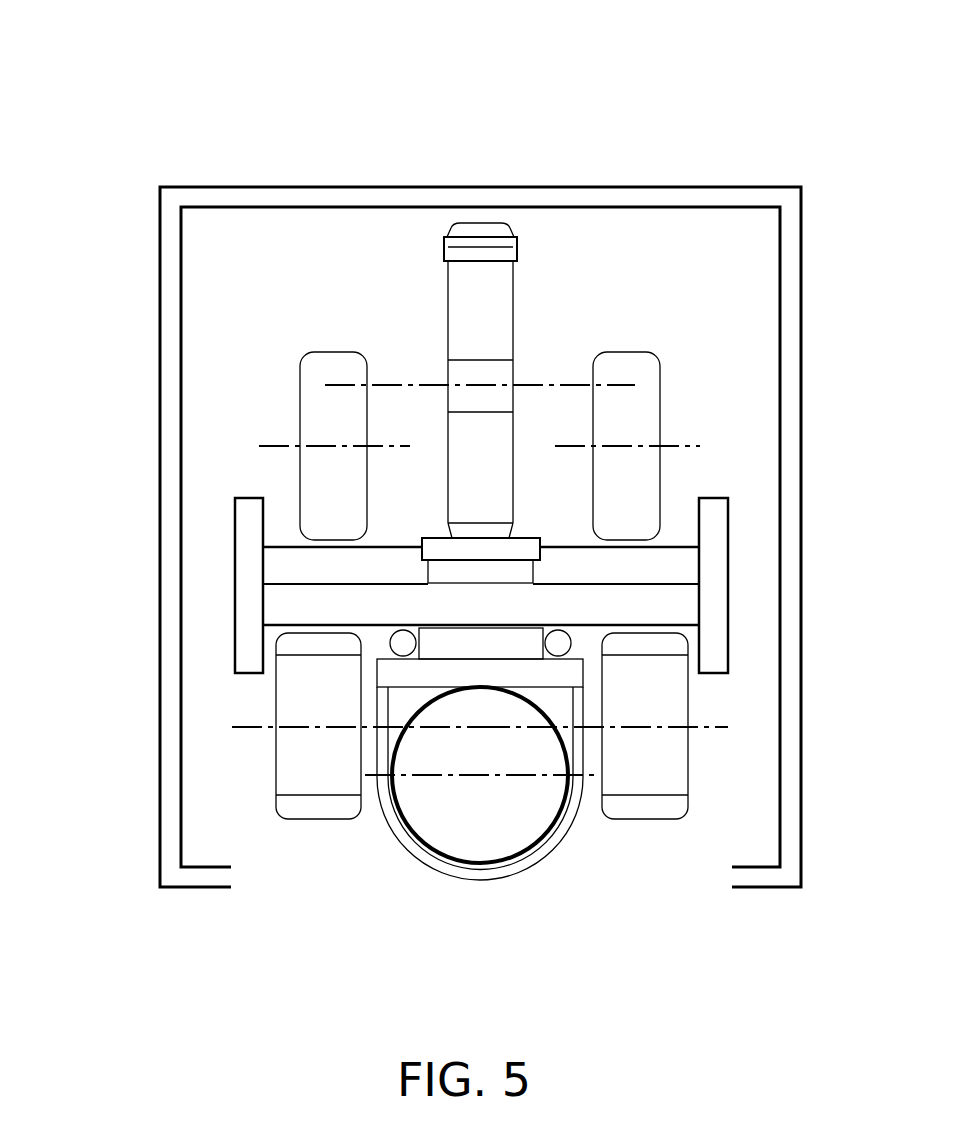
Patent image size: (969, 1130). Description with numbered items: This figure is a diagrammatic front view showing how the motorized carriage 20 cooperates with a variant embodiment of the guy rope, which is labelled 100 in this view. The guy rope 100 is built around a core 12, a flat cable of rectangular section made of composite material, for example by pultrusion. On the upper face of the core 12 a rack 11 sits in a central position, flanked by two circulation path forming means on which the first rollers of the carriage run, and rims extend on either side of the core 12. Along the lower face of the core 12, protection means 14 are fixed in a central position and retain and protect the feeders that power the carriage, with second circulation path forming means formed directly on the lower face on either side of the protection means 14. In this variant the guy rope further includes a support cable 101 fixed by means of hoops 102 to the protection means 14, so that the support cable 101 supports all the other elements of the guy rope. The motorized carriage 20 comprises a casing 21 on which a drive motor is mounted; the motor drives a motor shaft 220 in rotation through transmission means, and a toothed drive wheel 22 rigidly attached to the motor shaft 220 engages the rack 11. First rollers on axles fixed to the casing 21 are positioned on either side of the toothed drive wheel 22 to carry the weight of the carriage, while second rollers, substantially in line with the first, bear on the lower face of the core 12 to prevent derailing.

The motorized carriage 20 is at (172, 118).
The casing 21 is at (160, 325).
The toothed drive wheel 22 is at (487, 305).
The motor shaft 220 is at (410, 385).
The drive unit 100 is at (216, 574).
The rack 11 is at (442, 572).
The core 12 is at (683, 604).
The protection means 14 is at (393, 674).
The support cable 101 is at (495, 825).
The hoops 102 is at (415, 857).